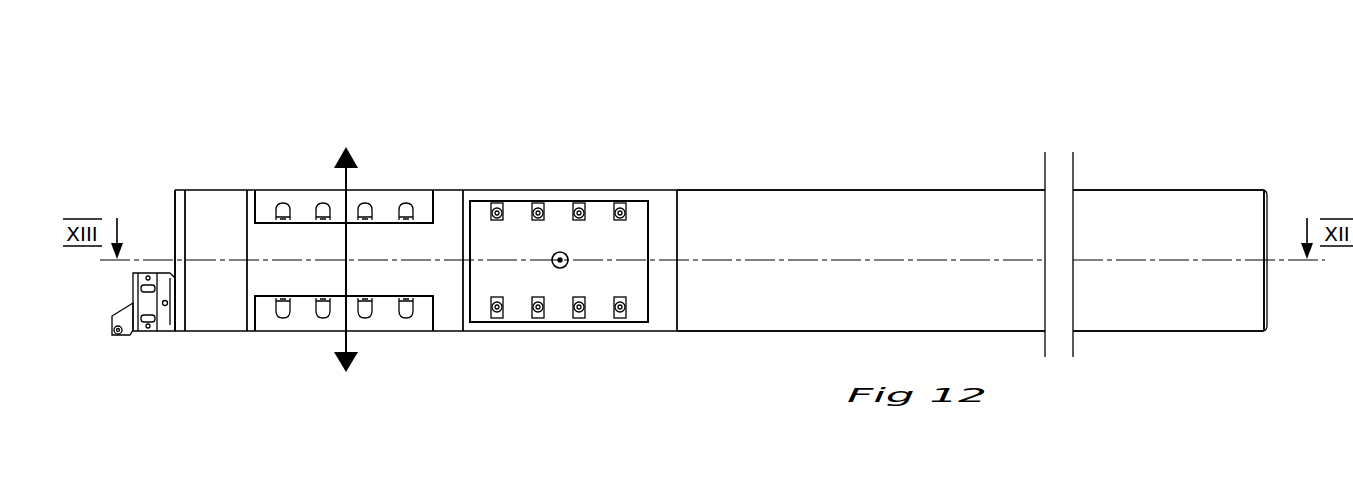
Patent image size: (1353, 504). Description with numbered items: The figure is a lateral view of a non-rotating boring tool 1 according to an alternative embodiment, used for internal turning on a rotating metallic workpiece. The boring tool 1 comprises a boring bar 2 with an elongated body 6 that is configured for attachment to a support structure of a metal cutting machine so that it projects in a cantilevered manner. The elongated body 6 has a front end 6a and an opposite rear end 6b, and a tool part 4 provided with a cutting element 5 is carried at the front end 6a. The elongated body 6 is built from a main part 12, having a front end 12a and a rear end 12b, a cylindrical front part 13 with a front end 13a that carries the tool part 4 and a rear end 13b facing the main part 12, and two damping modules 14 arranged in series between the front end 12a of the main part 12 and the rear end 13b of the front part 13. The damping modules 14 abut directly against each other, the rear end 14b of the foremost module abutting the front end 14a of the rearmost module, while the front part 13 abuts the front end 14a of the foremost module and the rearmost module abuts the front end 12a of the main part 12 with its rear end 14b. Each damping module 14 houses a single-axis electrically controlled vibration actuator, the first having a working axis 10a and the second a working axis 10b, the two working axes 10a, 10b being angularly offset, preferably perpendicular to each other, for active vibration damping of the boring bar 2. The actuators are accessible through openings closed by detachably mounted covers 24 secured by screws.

The boring tool 1 is at (508, 120).
The boring bar 2 is at (912, 162).
The tool part 4 is at (180, 270).
The cutting element 5 is at (110, 335).
The elongated body 6 is at (763, 335).
The front end 6a is at (183, 343).
The rear end 6b is at (1262, 341).
The working axis 10a is at (558, 252).
The working axis 10b is at (343, 235).
The main part 12 is at (843, 198).
The front end 12a is at (678, 185).
The rear end 12b is at (1265, 182).
The front part 13 is at (223, 200).
The front end 13a is at (188, 185).
The rear end 13b is at (247, 182).
The damping module 14 is at (422, 235).
The front end 14a is at (245, 337).
The rear end 14b is at (458, 337).
The cover 24 is at (302, 200).